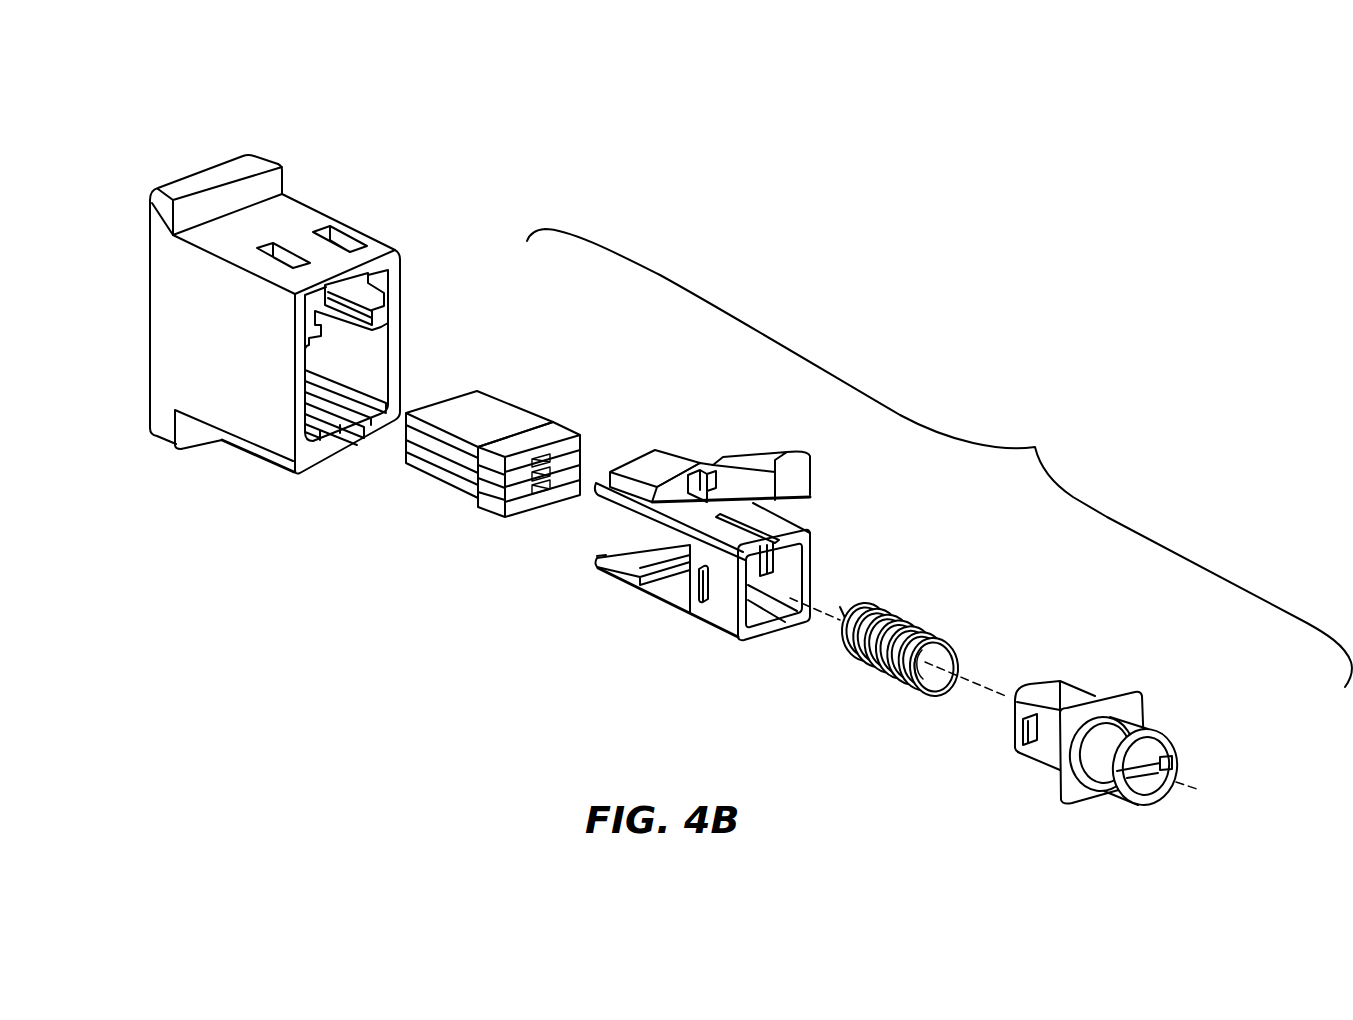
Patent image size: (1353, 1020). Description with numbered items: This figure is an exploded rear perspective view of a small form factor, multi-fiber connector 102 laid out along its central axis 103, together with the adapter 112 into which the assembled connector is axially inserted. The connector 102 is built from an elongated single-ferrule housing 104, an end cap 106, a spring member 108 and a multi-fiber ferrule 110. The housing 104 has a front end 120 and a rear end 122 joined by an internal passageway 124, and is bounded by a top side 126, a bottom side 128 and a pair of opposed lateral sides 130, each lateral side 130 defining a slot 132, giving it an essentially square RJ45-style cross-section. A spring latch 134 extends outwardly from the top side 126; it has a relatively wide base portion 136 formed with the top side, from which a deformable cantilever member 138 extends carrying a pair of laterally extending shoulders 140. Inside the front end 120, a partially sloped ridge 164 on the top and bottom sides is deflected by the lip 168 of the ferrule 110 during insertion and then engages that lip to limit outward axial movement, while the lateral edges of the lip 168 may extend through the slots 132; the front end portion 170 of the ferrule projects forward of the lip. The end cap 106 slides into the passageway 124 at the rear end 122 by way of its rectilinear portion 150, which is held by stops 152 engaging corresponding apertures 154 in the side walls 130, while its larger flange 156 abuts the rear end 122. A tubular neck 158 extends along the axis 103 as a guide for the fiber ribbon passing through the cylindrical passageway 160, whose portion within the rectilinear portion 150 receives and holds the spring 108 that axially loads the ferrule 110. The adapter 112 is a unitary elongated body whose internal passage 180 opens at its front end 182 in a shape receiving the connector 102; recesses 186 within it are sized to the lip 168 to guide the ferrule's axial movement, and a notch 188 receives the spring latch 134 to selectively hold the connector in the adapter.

The multi-fiber connector 102 is at (939, 458).
The central axis 103 is at (985, 688).
The elongated single-ferrule housing 104 is at (694, 608).
The end cap 106 is at (1074, 754).
The spring member 108 is at (875, 685).
The multi-fiber ferrule 110 is at (476, 478).
The adapter 112 is at (355, 212).
The front end 120 is at (590, 555).
The rear end 122 is at (733, 646).
The internal passageway 124 is at (789, 573).
The top side 126 is at (783, 532).
The bottom side 128 is at (772, 632).
The lateral side 130 is at (730, 617).
The slot 132 is at (674, 581).
The spring latch 134 is at (138, 435).
The base portion 136 is at (672, 465).
The cantilever member 138 is at (753, 463).
The laterally extending shoulders 140 is at (702, 474).
The rectilinear portion 150 is at (1060, 690).
The stops 152 is at (1020, 731).
The apertures 154 is at (712, 592).
The flange 156 is at (1102, 698).
The tubular neck 158 is at (1135, 806).
The cylindrical passageway 160 is at (1153, 780).
The partially sloped ridge 164 is at (642, 553).
The lip 168 is at (528, 437).
The front end portion 170 is at (418, 472).
The internal passage 180 is at (356, 352).
The front end 182 is at (283, 482).
The recesses 186 is at (310, 378).
The notch 188 is at (352, 282).